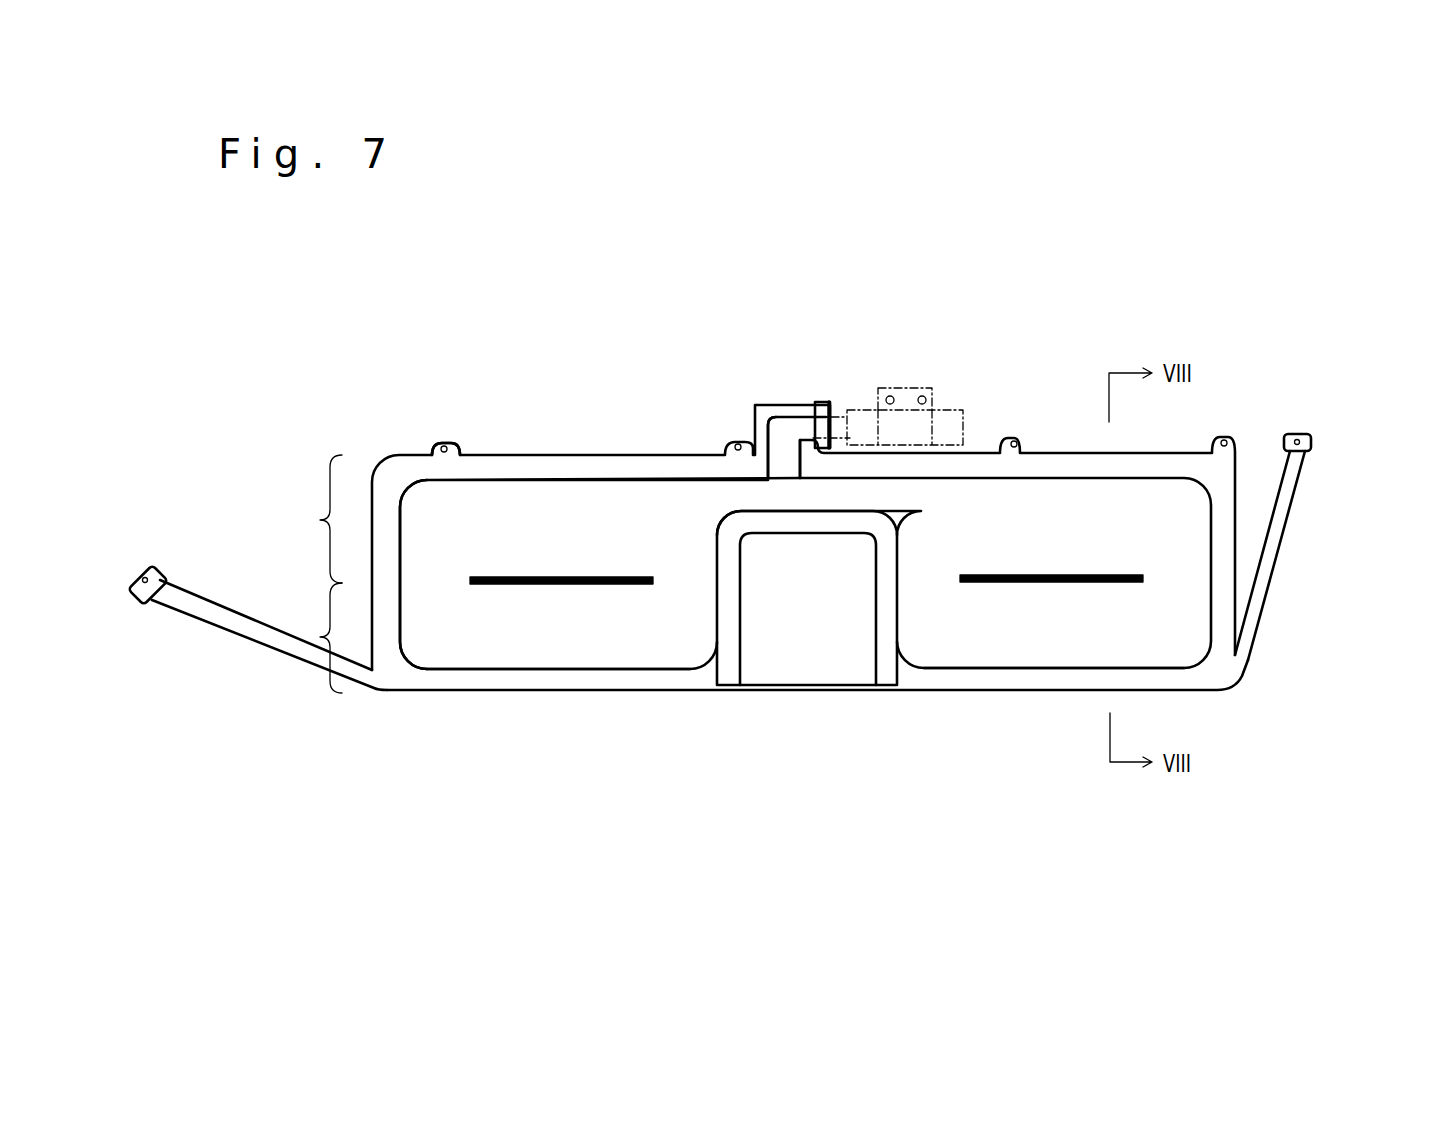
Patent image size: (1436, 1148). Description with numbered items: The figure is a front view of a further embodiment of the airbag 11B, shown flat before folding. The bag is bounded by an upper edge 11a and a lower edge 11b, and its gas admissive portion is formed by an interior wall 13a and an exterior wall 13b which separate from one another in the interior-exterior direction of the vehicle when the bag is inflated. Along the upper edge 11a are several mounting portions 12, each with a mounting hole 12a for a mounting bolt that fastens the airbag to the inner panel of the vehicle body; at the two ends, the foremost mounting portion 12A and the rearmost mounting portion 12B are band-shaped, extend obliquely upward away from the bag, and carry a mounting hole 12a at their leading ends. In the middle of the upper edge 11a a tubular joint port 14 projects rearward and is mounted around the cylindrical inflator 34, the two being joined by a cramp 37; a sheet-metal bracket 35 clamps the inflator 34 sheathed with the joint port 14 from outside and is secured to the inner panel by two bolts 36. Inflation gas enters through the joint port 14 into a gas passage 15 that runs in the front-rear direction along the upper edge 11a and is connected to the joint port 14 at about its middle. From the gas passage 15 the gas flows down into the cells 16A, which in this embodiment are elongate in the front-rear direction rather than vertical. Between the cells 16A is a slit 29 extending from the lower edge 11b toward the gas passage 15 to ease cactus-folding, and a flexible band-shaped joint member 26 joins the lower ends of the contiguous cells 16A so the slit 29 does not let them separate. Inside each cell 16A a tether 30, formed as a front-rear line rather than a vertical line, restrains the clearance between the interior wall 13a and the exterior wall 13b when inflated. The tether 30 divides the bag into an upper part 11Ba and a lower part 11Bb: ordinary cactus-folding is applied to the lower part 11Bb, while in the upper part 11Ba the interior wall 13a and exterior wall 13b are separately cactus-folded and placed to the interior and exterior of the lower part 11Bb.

The airbag 11B is at (280, 355).
The upper edge 11a is at (577, 468).
The lower edge 11b is at (570, 675).
The upper part 11Ba is at (290, 519).
The lower part 11Bb is at (293, 638).
The mounting portion 12 is at (455, 443).
The mounting hole 12a is at (440, 443).
The foremost mounting portion 12A is at (220, 613).
The rearmost mounting portion 12B is at (1282, 533).
The interior wall 13a is at (450, 620).
The exterior wall 13b is at (480, 627).
The joint port 14 is at (790, 427).
The gas passage 15 is at (750, 497).
The cell 16A is at (656, 645).
The joint member 26 is at (810, 690).
The slit 29 is at (830, 657).
The tether 30 is at (537, 577).
The inflator 34 is at (955, 410).
The bracket 35 is at (928, 397).
The bolt 36 is at (921, 394).
The cramp 37 is at (820, 448).